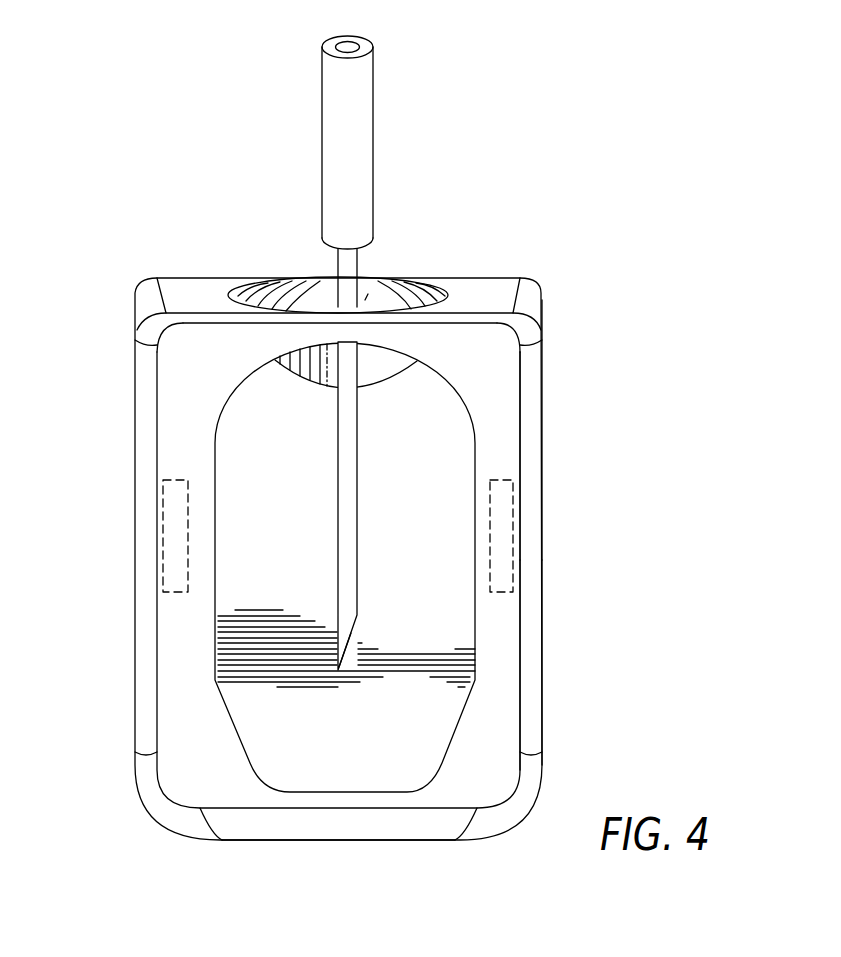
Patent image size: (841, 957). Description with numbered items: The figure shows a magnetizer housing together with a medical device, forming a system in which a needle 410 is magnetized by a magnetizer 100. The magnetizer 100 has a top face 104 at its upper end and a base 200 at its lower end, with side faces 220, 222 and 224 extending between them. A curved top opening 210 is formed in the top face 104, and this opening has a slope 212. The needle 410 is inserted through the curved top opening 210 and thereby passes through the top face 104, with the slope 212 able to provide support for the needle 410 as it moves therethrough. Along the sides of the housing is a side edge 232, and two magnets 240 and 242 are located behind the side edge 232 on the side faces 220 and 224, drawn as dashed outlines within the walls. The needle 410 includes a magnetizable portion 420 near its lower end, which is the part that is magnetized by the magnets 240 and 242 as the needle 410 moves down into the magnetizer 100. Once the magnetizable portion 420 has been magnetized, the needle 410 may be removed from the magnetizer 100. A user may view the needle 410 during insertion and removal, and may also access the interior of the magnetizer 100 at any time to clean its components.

The magnetizer 100 is at (628, 322).
The top face 104 is at (193, 294).
The base 200 is at (430, 840).
The curved top opening 210 is at (393, 297).
The slope 212 is at (317, 377).
The side face 220 is at (148, 645).
The side face 222 is at (505, 732).
The side face 224 is at (530, 432).
The side edge 232 is at (240, 733).
The magnet 240 is at (163, 522).
The magnet 242 is at (505, 555).
The needle 410 is at (363, 147).
The magnetizable portion 420 is at (350, 487).